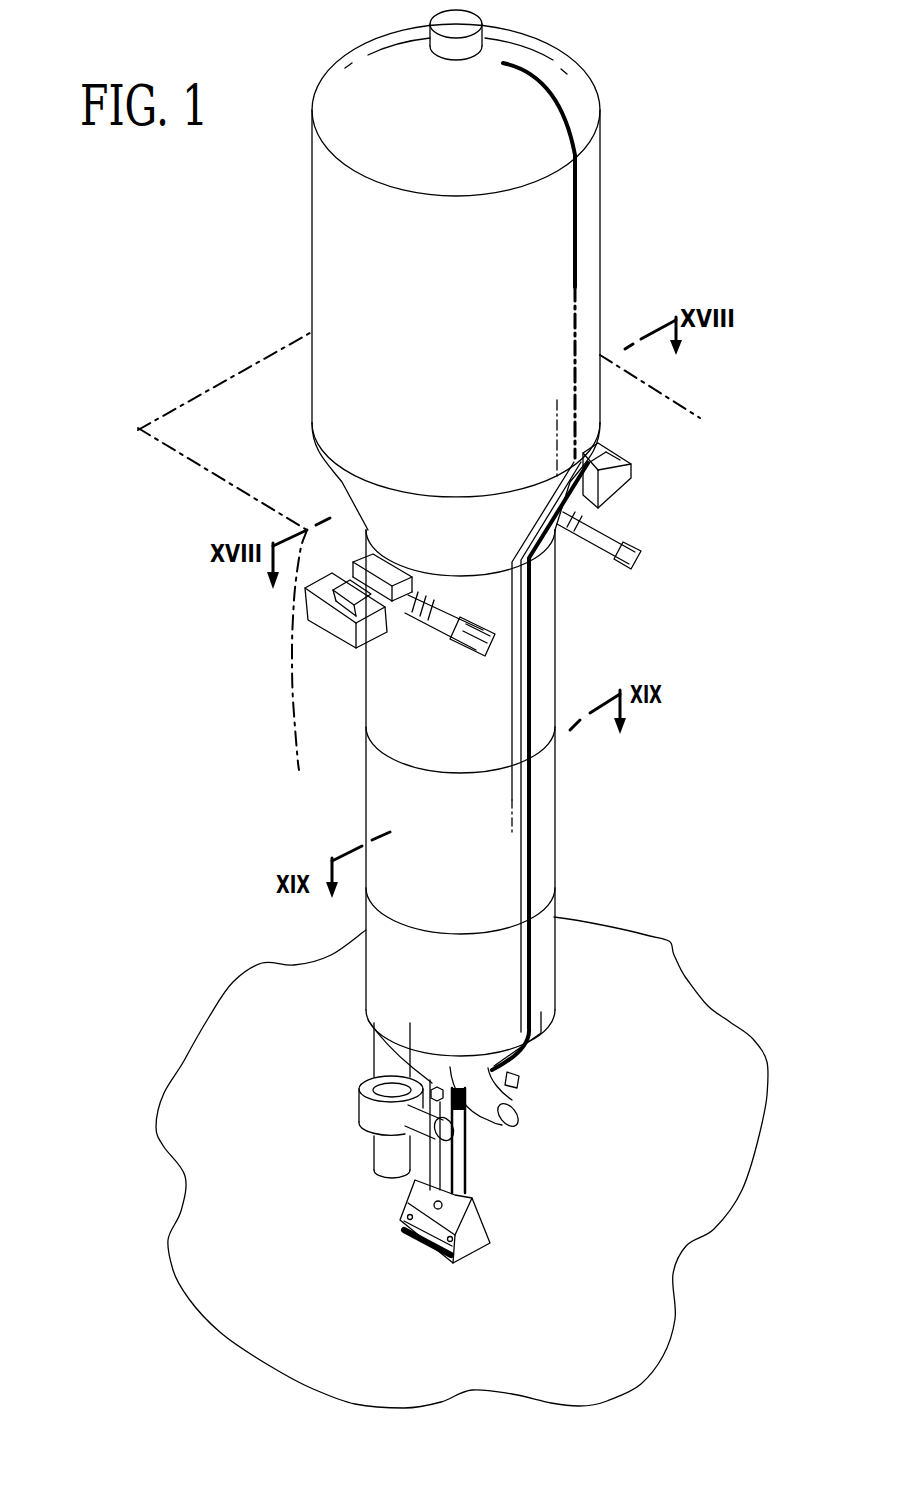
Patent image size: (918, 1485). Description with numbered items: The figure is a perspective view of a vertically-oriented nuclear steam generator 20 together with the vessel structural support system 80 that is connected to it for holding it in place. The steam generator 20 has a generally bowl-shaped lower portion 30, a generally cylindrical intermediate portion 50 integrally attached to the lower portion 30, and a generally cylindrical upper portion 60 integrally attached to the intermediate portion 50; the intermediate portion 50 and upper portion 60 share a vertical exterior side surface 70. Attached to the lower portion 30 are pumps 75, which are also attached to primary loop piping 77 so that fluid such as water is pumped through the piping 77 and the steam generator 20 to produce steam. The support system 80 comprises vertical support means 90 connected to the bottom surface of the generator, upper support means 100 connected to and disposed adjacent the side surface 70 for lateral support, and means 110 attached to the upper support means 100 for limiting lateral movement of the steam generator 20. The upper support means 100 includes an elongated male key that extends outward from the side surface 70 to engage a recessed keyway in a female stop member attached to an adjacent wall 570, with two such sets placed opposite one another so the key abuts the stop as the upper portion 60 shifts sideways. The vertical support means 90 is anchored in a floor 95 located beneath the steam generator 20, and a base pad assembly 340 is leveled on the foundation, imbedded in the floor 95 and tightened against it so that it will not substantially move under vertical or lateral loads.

The nuclear steam generator 20 is at (601, 151).
The vertical exterior side surface 70 is at (601, 207).
The upper portion 60 is at (601, 237).
The wall 570 is at (683, 410).
The upper support means 100 is at (408, 668).
The means for limiting lateral movement 110 is at (583, 572).
The vessel structural support system 80 is at (590, 1112).
The intermediate portion 50 is at (545, 790).
The lower portion 30 is at (543, 1043).
The primary loop piping 77 is at (517, 1088).
The pumps 75 is at (366, 1105).
The vertical support means 90 is at (498, 1168).
The base pad assembly 340 is at (478, 1272).
The floor 95 is at (707, 1060).